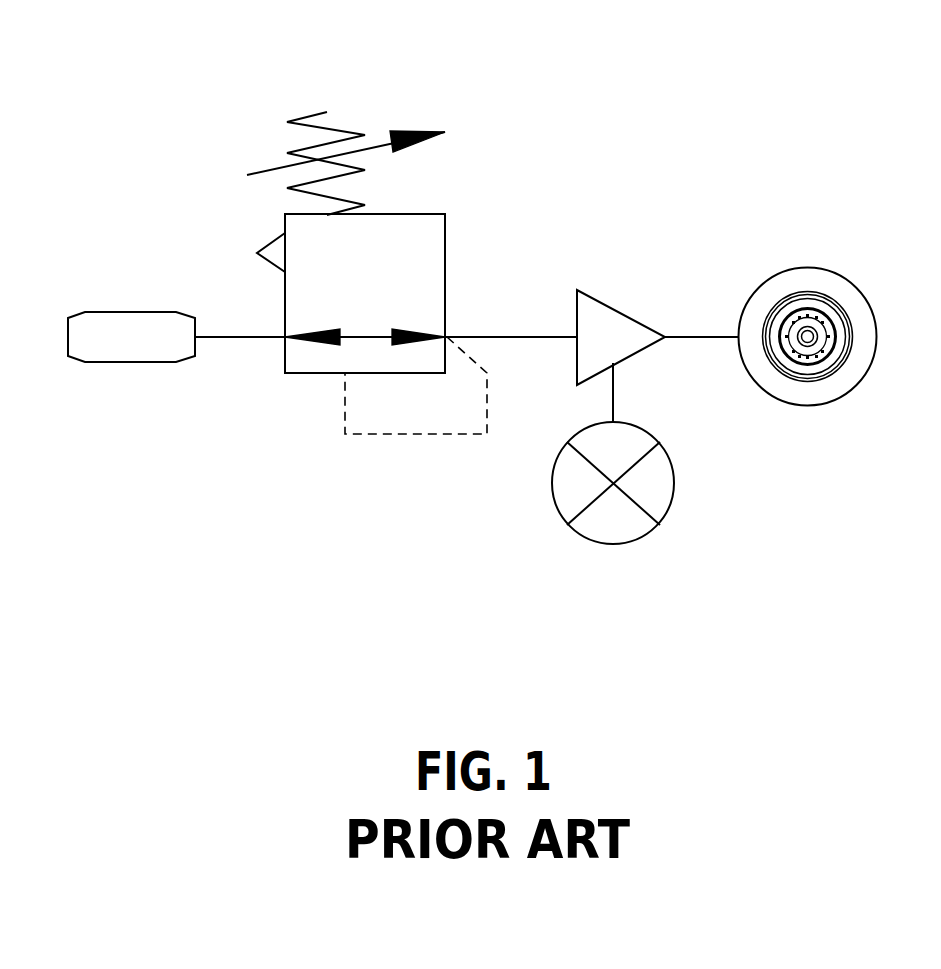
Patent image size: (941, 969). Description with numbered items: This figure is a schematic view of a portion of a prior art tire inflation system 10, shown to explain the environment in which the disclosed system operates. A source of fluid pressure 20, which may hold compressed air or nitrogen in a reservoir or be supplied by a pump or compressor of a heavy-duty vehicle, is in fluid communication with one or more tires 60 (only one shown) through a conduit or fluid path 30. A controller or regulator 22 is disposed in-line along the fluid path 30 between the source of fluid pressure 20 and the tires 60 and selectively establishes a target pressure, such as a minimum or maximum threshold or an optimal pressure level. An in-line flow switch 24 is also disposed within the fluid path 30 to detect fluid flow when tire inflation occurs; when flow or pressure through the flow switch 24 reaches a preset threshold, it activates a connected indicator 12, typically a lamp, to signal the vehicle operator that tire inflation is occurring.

The prior art tire inflation system 10 is at (645, 135).
The indicator 12 is at (587, 540).
The source of fluid pressure 20 is at (110, 312).
The regulator 22 is at (427, 215).
The flow switch 24 is at (633, 353).
The fluid path 30 is at (483, 337).
The tires 60 is at (858, 285).